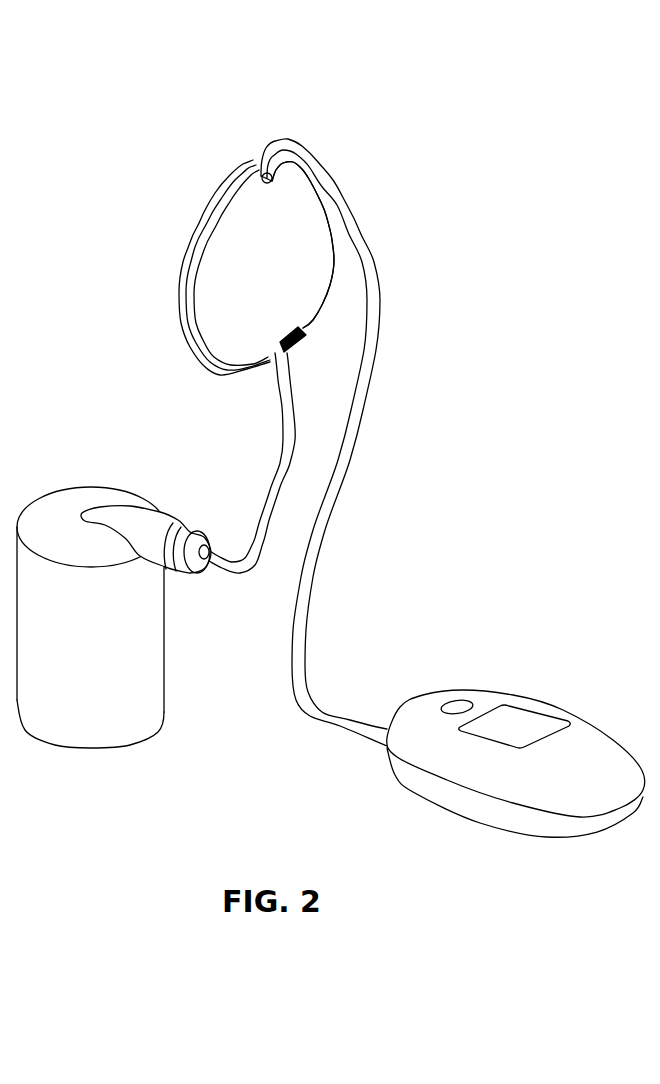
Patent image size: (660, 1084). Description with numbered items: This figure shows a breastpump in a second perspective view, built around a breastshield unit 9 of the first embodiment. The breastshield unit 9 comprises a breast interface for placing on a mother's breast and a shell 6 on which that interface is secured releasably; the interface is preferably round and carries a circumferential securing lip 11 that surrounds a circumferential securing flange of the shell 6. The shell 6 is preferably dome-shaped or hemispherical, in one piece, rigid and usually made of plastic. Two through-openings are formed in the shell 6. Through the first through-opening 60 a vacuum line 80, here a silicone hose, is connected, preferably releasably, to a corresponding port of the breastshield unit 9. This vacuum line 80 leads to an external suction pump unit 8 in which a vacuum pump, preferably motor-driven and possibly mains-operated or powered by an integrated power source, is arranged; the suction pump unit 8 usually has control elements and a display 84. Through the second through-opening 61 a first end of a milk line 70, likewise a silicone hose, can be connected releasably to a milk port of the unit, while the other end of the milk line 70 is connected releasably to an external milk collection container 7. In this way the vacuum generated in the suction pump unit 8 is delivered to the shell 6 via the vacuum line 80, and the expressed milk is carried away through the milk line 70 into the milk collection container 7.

The breastshield unit 9 is at (218, 158).
The circumferential securing lip 11 is at (183, 264).
The shell 6 is at (300, 247).
The first through-opening 60 is at (289, 209).
The second through-opening 61 is at (310, 331).
The vacuum line 80 is at (357, 417).
The milk line 70 is at (283, 441).
The milk collection container 7 is at (128, 653).
The suction pump unit 8 is at (603, 740).
The display 84 is at (500, 720).